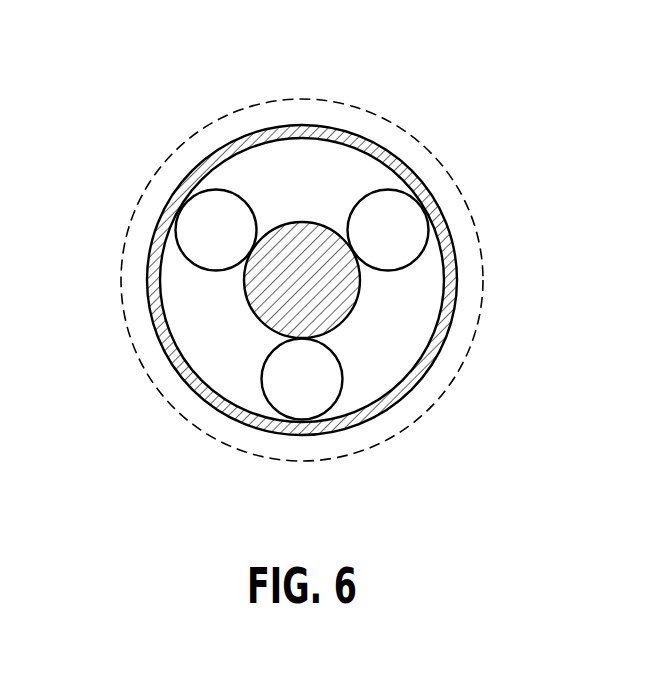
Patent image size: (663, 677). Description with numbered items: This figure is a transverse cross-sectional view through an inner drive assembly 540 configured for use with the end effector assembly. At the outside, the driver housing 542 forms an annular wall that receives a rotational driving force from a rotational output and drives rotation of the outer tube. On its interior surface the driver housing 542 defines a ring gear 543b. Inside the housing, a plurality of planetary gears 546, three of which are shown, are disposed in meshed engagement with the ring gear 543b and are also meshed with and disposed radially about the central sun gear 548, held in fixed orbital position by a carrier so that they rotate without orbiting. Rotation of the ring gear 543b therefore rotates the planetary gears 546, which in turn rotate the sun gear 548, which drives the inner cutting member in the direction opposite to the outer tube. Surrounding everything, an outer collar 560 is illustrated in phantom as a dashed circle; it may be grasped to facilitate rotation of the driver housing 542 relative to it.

The inner drive assembly 540 is at (486, 102).
The driver housing 542 is at (217, 162).
The ring gear 543b is at (310, 140).
The planetary gears 546 is at (407, 238).
The sun gear 548 is at (340, 290).
The outer collar 560 is at (483, 268).